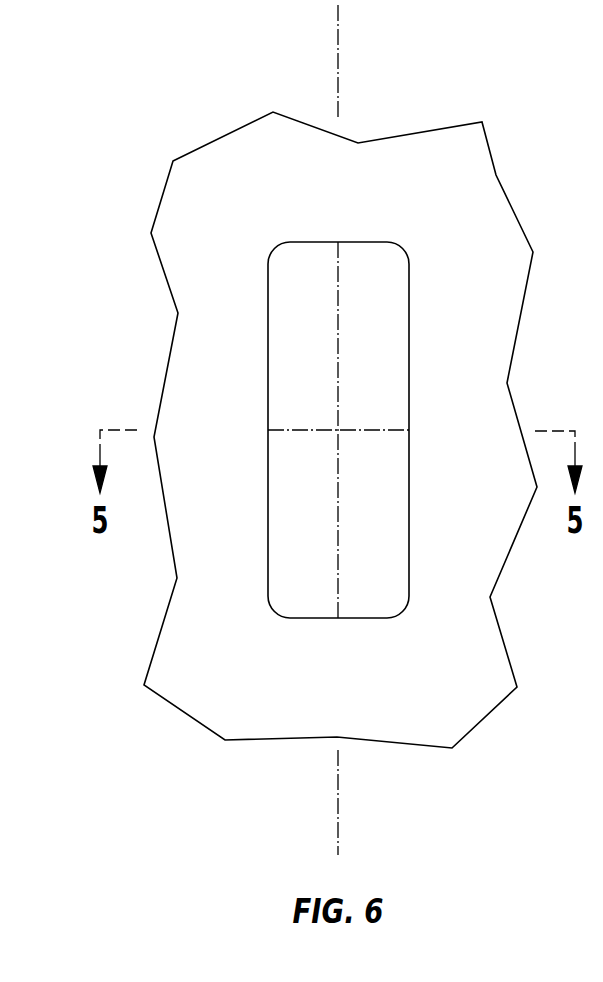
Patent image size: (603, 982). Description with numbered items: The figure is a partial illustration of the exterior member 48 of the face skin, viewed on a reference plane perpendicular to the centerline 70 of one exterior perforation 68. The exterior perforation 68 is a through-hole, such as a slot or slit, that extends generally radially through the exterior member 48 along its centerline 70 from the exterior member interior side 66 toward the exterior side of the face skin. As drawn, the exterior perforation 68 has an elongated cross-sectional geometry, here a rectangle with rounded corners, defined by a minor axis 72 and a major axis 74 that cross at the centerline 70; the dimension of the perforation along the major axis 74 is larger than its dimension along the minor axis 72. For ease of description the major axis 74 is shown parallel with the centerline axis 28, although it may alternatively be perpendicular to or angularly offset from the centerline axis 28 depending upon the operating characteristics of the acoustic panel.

The centerline axis 28 is at (339, 45).
The exterior member 48 is at (499, 120).
The exterior member interior side 66 is at (185, 403).
The exterior member perforation 68 is at (352, 339).
The centerline 70 is at (339, 431).
The minor axis 72 is at (355, 430).
The major axis 74 is at (339, 597).